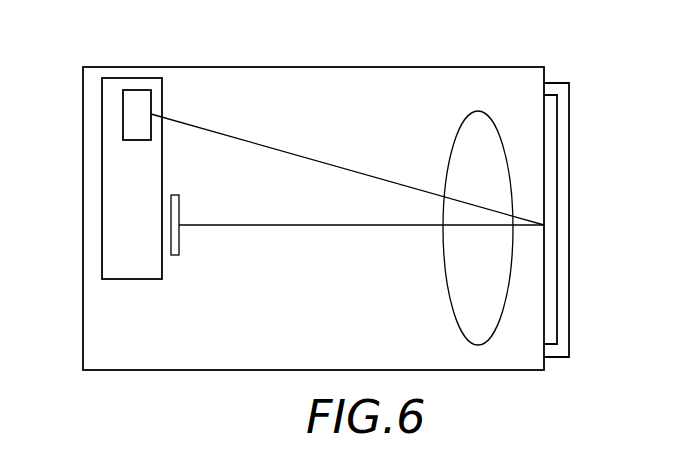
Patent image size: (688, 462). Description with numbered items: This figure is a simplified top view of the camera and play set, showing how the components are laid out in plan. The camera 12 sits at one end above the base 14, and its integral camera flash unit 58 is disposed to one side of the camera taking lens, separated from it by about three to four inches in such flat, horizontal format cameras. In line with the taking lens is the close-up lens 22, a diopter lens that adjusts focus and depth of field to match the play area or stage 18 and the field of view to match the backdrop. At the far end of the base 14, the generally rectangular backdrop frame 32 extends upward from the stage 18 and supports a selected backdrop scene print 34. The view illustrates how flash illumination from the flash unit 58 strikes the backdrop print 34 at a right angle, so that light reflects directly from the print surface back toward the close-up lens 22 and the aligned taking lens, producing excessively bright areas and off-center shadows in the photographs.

The camera 12 is at (102, 255).
The base 14 is at (346, 328).
The play area or stage 18 is at (491, 305).
The close-up lens 22 is at (180, 240).
The backdrop frame 32 is at (572, 327).
The backdrop scene print 34 is at (560, 127).
The camera flash unit 58 is at (125, 90).